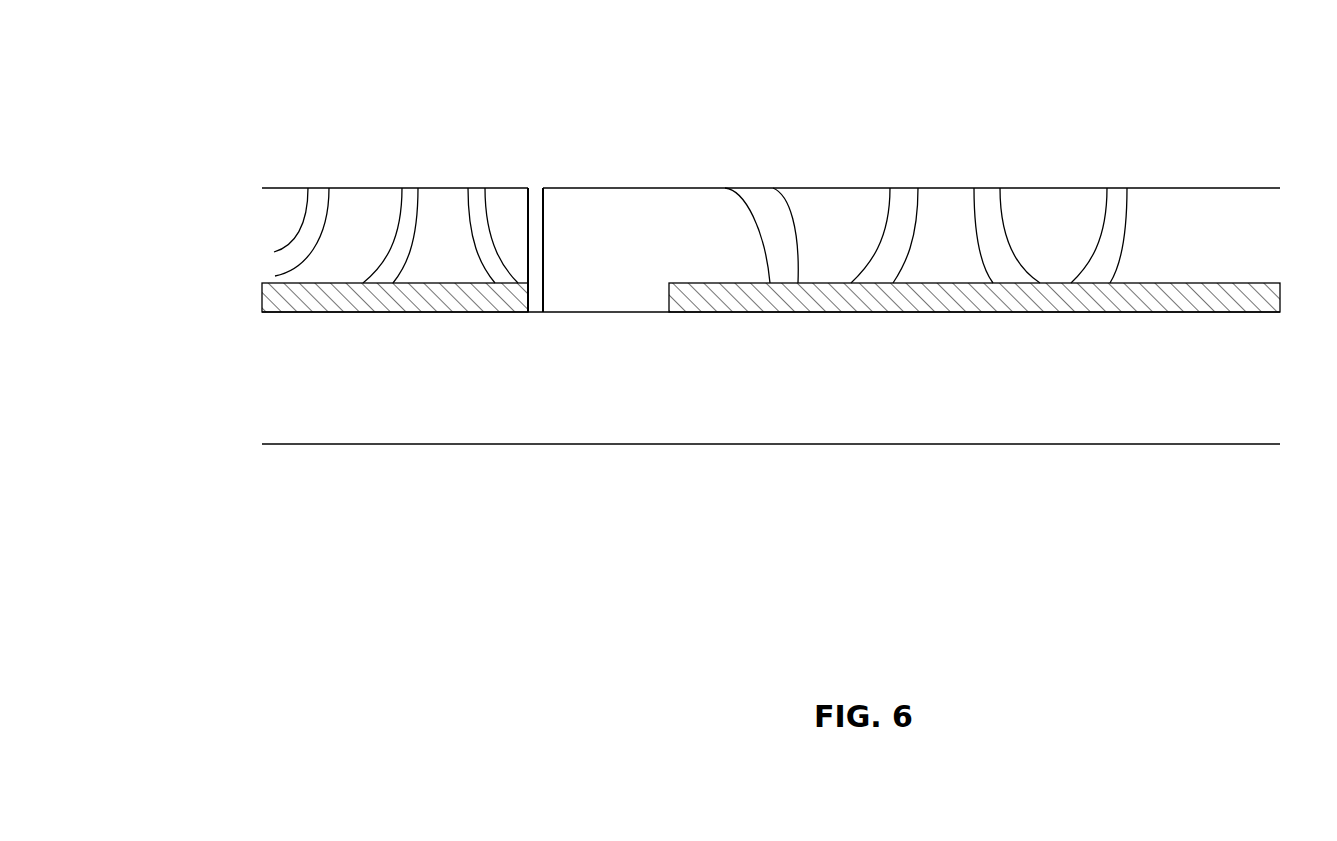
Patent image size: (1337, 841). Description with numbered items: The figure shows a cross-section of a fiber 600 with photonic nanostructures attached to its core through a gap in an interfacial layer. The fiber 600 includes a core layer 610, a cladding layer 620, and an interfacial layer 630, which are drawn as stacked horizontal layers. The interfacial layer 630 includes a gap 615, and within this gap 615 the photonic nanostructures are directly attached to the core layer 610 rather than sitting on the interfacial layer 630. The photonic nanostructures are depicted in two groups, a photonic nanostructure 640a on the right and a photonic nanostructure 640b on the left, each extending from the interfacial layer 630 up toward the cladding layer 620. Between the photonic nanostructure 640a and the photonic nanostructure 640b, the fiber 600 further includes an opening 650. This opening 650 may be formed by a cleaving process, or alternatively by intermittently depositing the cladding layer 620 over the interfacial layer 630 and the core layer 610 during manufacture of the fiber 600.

The fiber 600 is at (408, 518).
The core layer 610 is at (1147, 382).
The gap 615 is at (596, 302).
The cladding layer 620 is at (1220, 226).
The interfacial layer 630 is at (263, 312).
The photonic nanostructure 640a is at (898, 215).
The photonic nanostructure 640b is at (285, 210).
The opening 650 is at (533, 207).